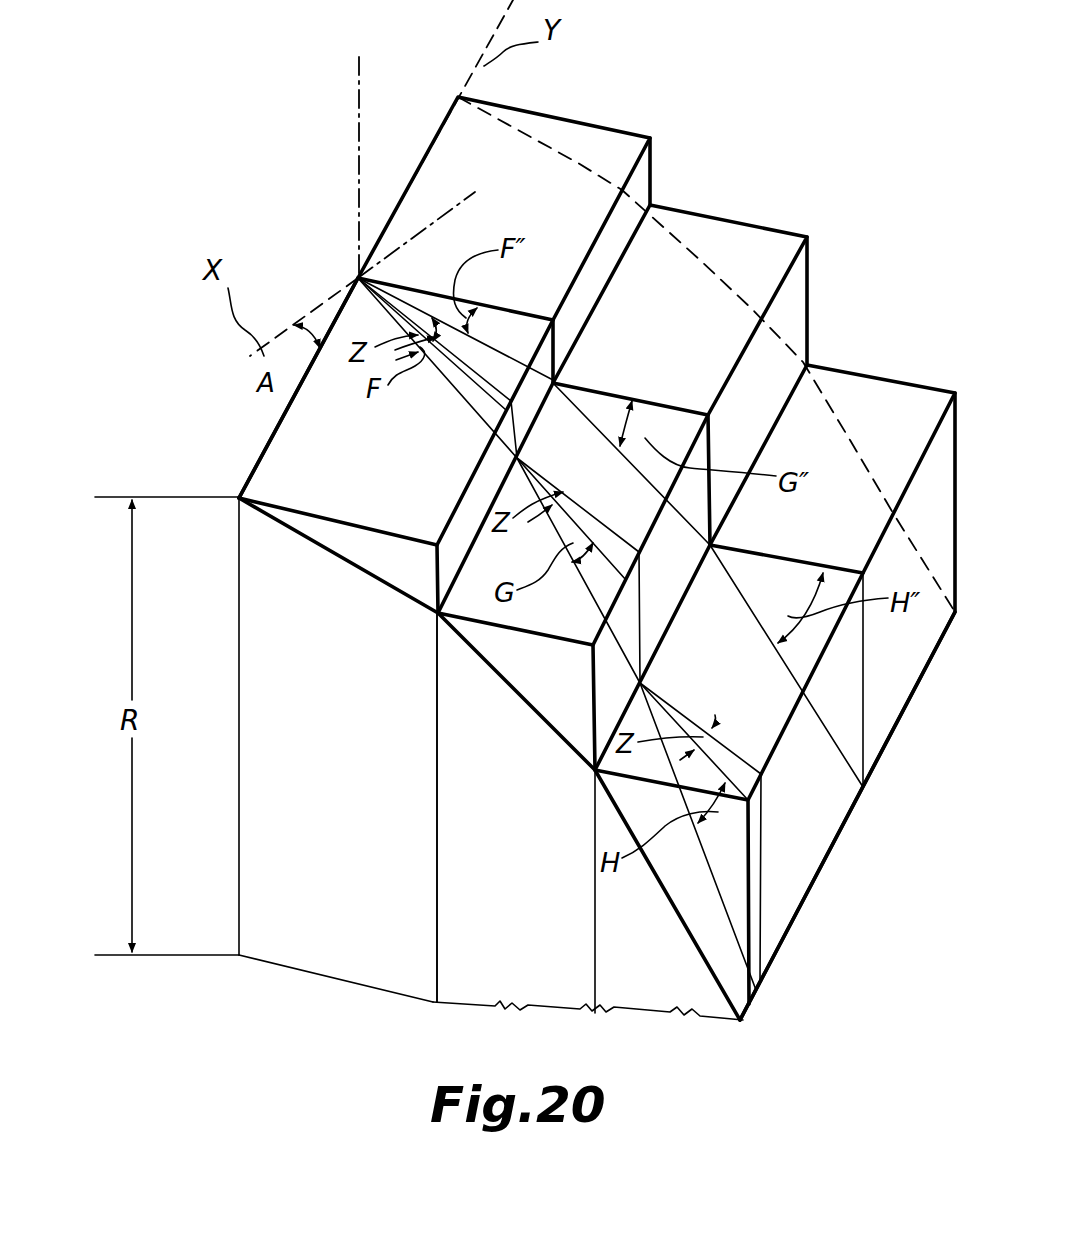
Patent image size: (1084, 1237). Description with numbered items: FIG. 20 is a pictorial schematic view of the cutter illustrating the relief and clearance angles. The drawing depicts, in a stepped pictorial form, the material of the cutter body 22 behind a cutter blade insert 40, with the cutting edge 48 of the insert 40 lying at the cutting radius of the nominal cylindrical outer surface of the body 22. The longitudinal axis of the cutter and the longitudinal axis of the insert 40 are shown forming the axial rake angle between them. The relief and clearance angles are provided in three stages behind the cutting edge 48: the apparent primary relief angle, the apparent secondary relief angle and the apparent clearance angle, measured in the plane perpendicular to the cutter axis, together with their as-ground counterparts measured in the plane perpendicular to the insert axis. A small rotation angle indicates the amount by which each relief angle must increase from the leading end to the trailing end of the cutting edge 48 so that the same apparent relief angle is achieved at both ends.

The cutter body 22 is at (710, 1007).
The cutter blade insert 40 is at (467, 998).
The cutting edge 48 is at (271, 438).